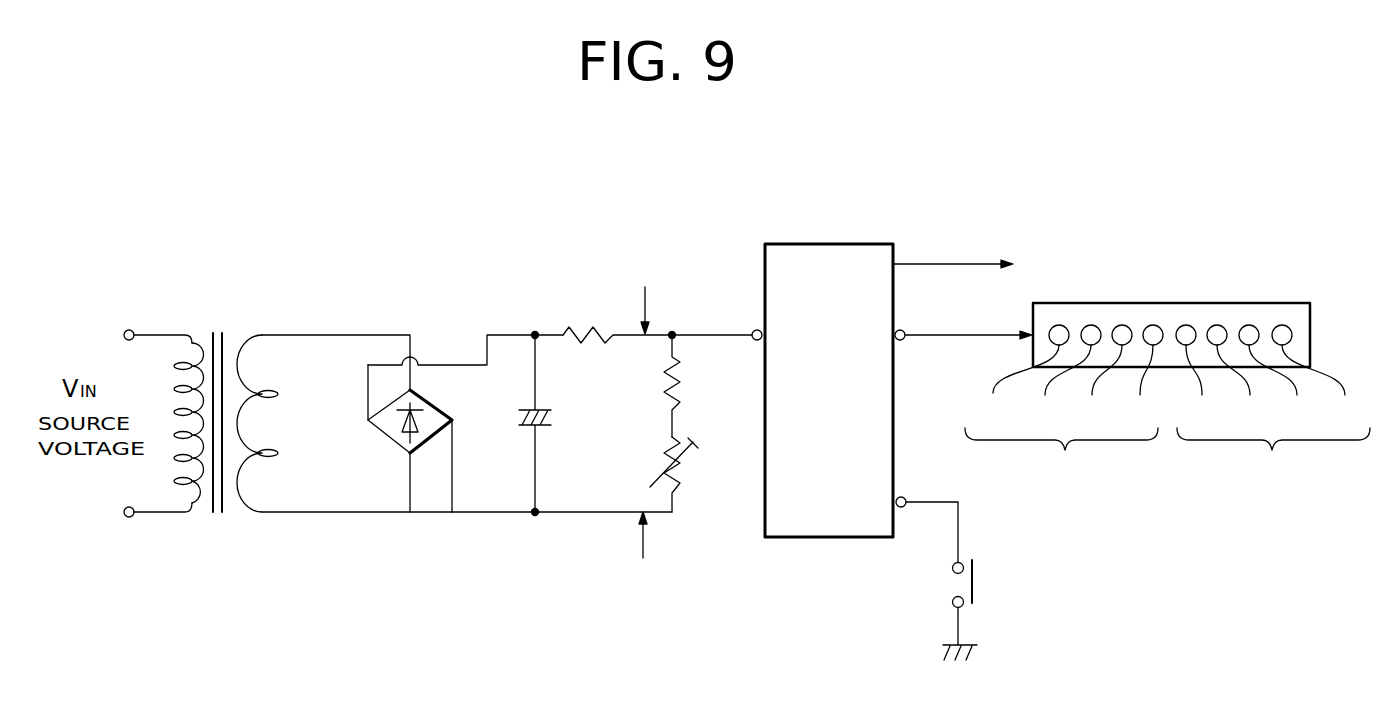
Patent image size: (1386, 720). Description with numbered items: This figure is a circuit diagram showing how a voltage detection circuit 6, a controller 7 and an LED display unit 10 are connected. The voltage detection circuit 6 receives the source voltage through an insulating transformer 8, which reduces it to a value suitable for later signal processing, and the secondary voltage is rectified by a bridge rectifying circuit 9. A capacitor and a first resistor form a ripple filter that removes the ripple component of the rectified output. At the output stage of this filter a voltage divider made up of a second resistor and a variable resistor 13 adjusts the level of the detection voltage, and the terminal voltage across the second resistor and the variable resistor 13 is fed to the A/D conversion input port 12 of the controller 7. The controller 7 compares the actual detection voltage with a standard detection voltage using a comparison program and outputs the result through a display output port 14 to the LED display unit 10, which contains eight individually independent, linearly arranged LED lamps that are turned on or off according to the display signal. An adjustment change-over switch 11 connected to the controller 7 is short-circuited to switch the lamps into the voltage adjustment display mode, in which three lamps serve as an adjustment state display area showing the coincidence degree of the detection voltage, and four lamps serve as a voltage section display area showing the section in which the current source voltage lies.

The voltage detection circuit 6 is at (507, 372).
The controller 7 is at (825, 244).
The insulating transformer 8 is at (214, 330).
The bridge rectifying circuit 9 is at (438, 410).
The LED display unit 10 is at (1215, 303).
The adjustment change-over switch 11 is at (977, 580).
The A/D conversion input port 12 is at (752, 330).
The variable resistor 13 is at (682, 470).
The display output port 14 is at (910, 330).